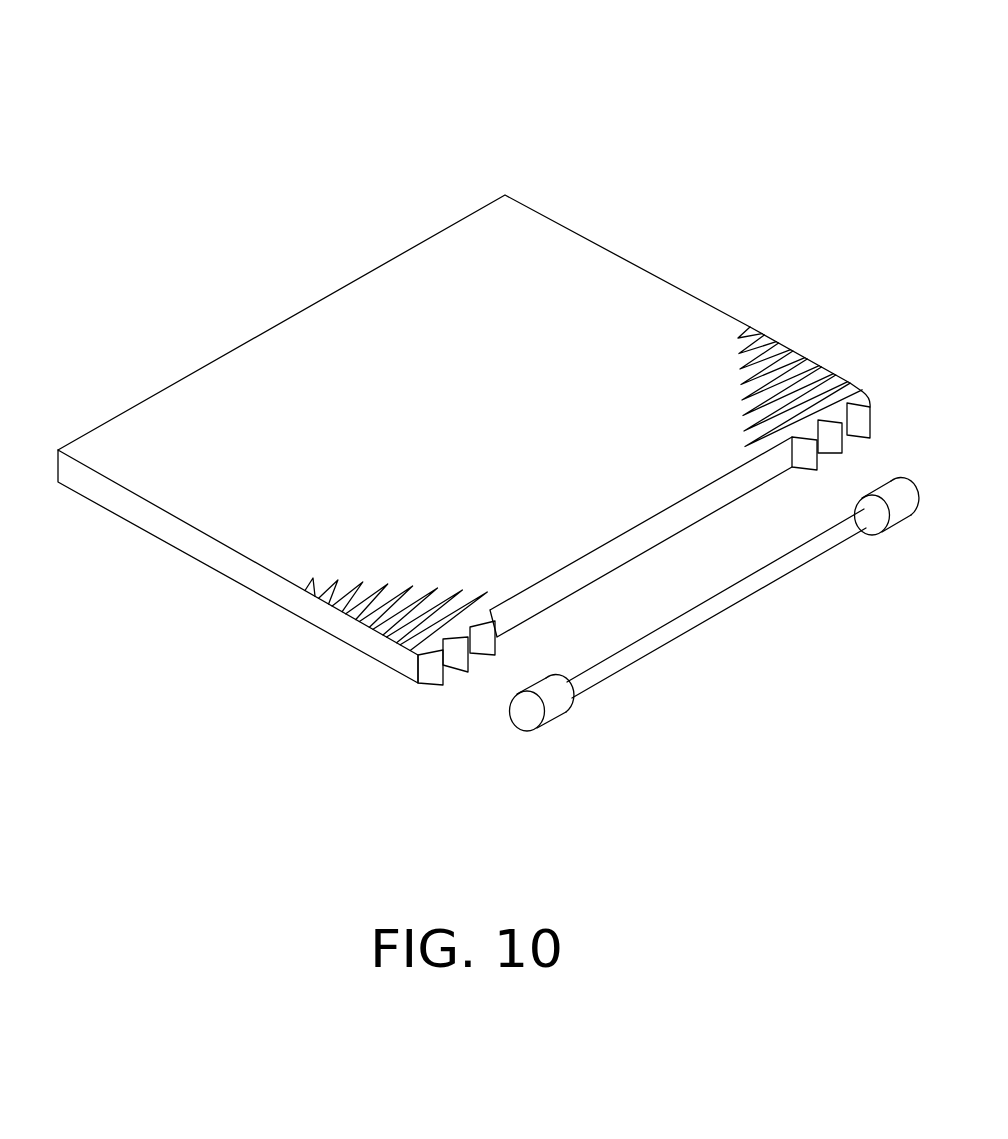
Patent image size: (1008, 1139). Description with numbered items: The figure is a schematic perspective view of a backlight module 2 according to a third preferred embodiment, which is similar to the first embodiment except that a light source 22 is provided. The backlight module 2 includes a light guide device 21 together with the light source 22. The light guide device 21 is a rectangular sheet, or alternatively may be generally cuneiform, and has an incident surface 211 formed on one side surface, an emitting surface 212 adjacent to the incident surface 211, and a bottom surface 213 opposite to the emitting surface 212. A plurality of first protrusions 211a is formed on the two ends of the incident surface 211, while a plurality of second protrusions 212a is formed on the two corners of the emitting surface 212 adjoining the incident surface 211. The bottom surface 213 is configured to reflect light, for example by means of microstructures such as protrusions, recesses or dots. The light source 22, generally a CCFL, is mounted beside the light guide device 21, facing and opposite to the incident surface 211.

The backlight module 2 is at (498, 65).
The light guide device 21 is at (300, 243).
The incident surface 211 is at (545, 593).
The first protrusions 211a is at (435, 667).
The emitting surface 212 is at (557, 285).
The second protrusions 212a is at (365, 607).
The bottom surface 213 is at (189, 566).
The light source 22 is at (670, 632).